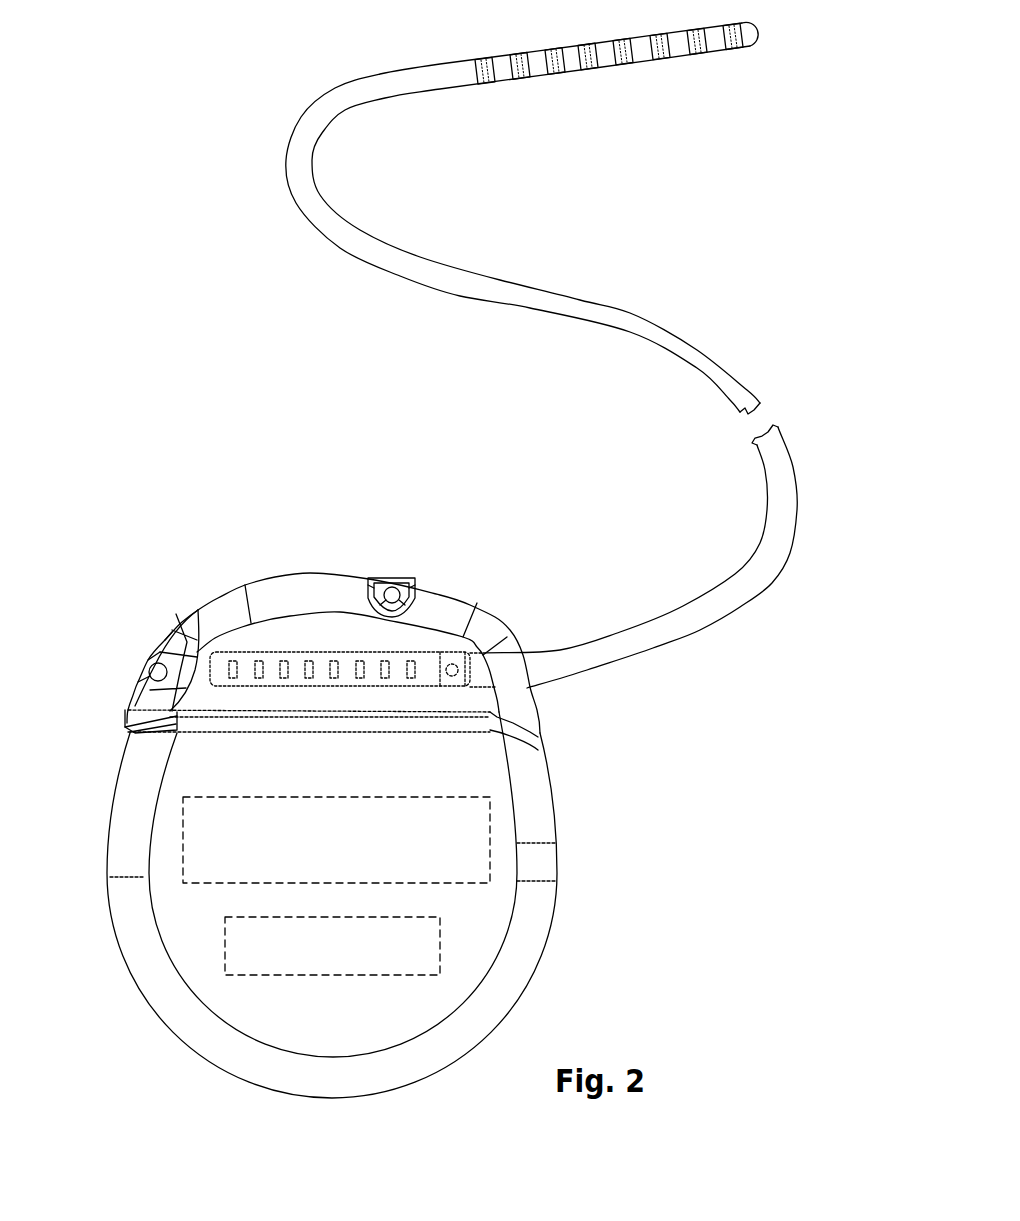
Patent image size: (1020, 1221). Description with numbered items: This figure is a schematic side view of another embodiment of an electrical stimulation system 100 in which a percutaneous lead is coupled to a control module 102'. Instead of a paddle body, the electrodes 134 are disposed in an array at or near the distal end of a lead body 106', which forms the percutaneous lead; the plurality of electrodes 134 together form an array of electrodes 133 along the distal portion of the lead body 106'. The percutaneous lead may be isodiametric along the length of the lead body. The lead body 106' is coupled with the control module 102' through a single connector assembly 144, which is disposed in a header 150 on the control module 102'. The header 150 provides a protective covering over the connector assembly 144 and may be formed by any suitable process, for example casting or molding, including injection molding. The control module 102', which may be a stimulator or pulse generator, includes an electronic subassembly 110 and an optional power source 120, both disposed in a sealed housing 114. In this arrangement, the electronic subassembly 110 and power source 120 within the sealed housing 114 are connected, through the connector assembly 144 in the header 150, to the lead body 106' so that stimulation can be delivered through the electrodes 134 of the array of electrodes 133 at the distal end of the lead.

The electrical stimulation system 100 is at (742, 236).
The control module 102' is at (297, 770).
The lead body 106' is at (541, 344).
The electronic subassembly 110 is at (200, 845).
The sealed housing 114 is at (182, 771).
The power source 120 is at (243, 950).
The array of electrodes 133 is at (745, 54).
The electrodes 134 is at (516, 59).
The connector assembly 144 is at (428, 650).
The header 150 is at (313, 578).